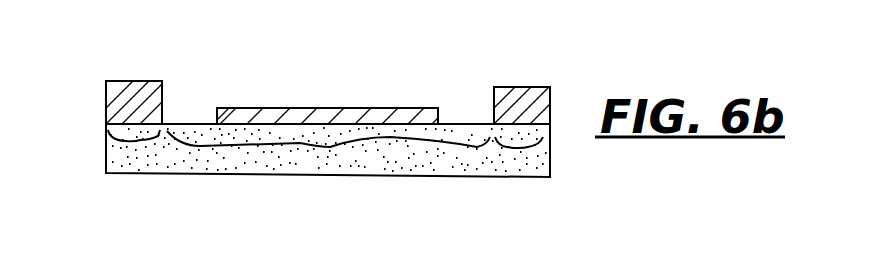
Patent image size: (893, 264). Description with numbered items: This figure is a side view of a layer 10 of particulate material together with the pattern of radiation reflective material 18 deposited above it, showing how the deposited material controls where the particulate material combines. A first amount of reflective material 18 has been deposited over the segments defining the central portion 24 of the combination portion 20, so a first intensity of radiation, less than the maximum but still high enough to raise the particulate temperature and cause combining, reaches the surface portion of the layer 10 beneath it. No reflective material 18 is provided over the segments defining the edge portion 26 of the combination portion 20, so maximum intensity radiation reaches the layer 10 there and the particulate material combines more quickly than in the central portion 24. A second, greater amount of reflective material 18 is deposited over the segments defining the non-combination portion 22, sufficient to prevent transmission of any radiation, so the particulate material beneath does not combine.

The layer 10 is at (547, 165).
The reflective material 18 is at (107, 107).
The combination portion 20 is at (330, 155).
The non-combination portion 22 is at (137, 146).
The central portion 24 is at (319, 101).
The edge portion 26 is at (195, 105).